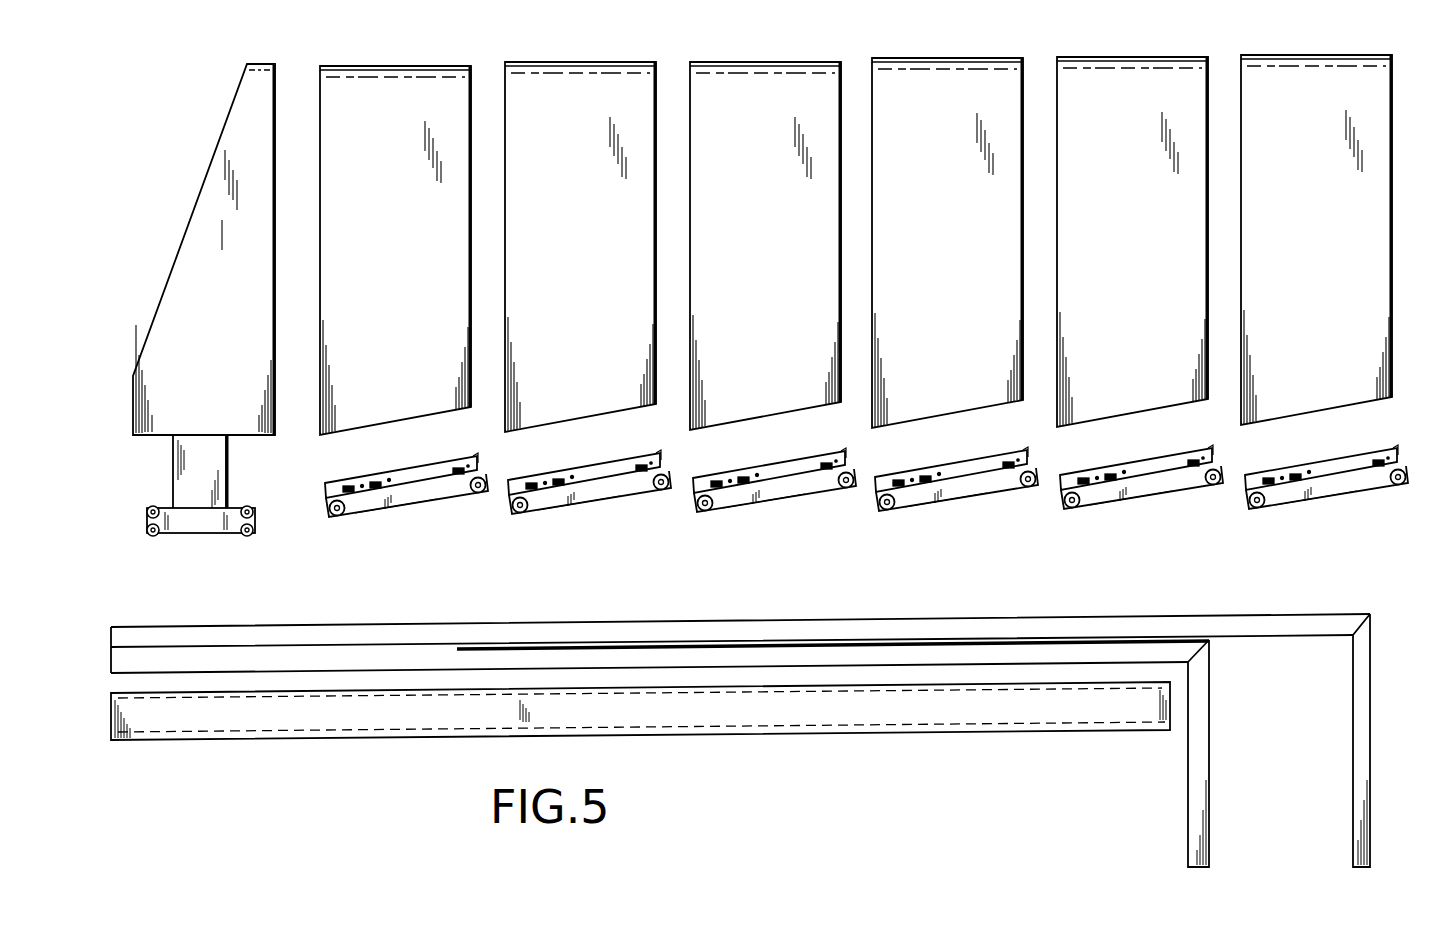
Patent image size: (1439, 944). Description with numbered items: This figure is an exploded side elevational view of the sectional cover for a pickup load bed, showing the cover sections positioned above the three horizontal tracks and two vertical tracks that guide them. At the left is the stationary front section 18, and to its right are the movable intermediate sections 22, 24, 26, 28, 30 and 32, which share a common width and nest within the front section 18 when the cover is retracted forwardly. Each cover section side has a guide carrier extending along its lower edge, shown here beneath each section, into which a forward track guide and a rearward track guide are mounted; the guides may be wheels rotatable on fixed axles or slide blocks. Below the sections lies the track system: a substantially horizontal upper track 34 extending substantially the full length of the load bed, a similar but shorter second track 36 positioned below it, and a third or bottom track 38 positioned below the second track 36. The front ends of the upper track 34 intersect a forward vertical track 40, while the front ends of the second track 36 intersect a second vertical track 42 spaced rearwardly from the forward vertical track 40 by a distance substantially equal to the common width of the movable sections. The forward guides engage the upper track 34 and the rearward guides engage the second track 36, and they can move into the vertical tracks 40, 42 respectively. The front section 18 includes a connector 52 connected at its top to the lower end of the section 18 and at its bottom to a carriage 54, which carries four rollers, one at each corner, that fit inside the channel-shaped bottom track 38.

The front section 18 is at (200, 317).
The movable intermediate section 22 is at (385, 267).
The movable intermediate section 24 is at (569, 262).
The movable intermediate section 26 is at (741, 255).
The movable intermediate section 28 is at (935, 257).
The movable intermediate section 30 is at (1120, 254).
The movable intermediate section 32 is at (1306, 260).
The upper track 34 is at (668, 630).
The second track 36 is at (765, 650).
The bottom track 38 is at (776, 712).
The forward vertical track 40 is at (1362, 750).
The second vertical track 42 is at (1198, 768).
The connector 52 is at (220, 470).
The carriage 54 is at (210, 525).